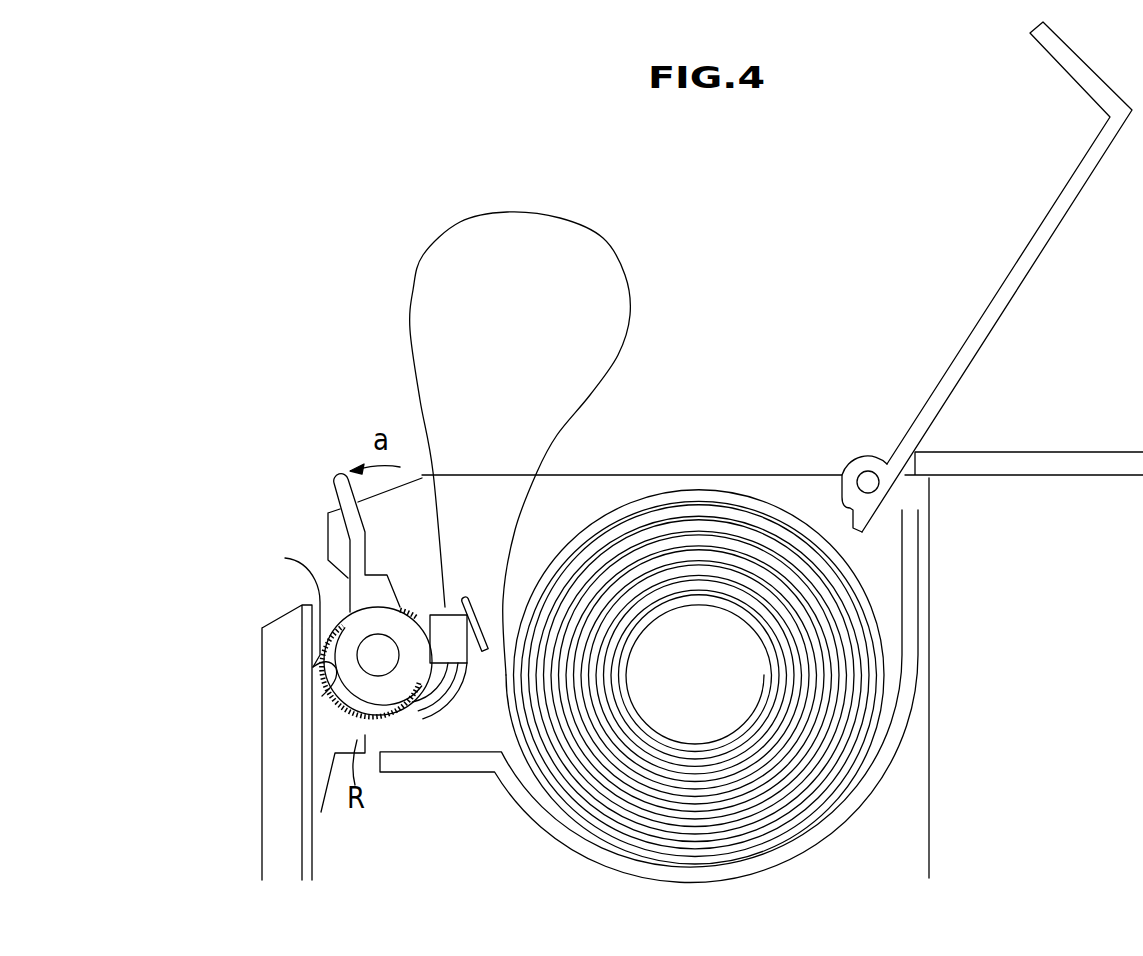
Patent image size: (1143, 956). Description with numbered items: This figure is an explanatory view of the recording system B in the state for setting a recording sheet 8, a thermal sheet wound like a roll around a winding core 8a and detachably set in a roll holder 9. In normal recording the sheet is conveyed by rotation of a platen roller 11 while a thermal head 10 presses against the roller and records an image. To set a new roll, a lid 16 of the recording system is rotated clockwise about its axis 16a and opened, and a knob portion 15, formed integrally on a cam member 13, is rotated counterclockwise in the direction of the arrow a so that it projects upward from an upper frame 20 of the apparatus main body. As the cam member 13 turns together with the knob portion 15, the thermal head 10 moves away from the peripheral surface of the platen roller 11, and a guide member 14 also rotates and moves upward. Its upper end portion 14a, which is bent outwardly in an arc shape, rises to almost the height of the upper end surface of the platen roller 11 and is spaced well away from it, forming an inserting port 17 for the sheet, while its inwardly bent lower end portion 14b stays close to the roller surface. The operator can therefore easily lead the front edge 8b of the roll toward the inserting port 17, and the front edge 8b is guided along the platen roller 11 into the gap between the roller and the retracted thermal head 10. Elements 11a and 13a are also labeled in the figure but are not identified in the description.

The recording sheet 8 is at (607, 368).
The winding core 8a is at (668, 718).
The front edge 8b is at (287, 557).
The roll holder 9 is at (552, 820).
The thermal head 10 is at (267, 645).
The platen roller 11 is at (388, 717).
The film leading end 11a is at (313, 667).
The cam member 13 is at (316, 667).
The rubber ring 13a is at (333, 676).
The guide member 14 is at (443, 683).
The upper end portion 14a is at (452, 597).
The lower end portion 14b is at (420, 722).
The knob portion 15 is at (333, 482).
The lid 16 is at (1052, 237).
The axis 16a is at (866, 471).
The inserting port 17 is at (452, 592).
The upper frame 20 is at (470, 475).